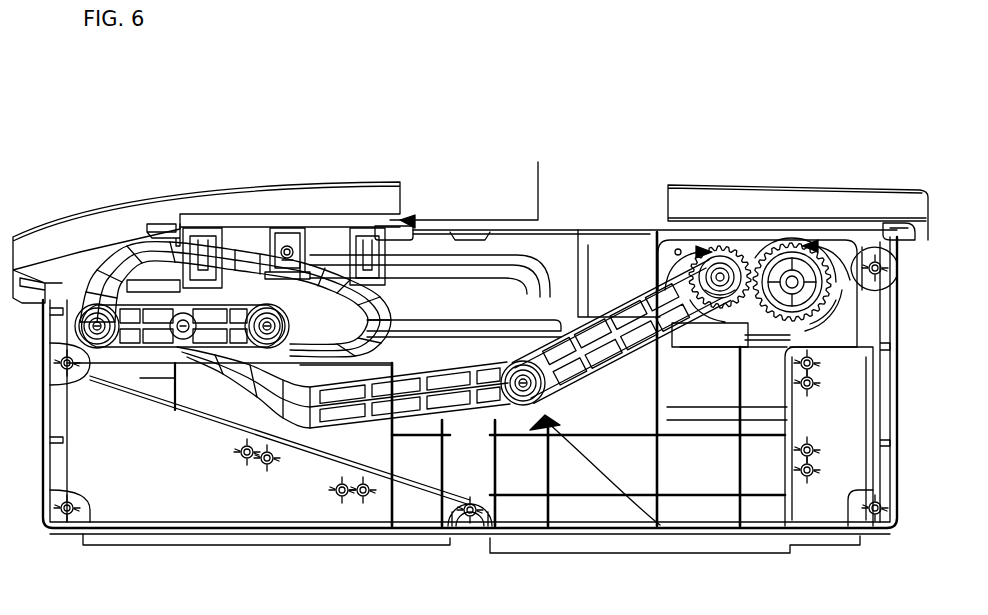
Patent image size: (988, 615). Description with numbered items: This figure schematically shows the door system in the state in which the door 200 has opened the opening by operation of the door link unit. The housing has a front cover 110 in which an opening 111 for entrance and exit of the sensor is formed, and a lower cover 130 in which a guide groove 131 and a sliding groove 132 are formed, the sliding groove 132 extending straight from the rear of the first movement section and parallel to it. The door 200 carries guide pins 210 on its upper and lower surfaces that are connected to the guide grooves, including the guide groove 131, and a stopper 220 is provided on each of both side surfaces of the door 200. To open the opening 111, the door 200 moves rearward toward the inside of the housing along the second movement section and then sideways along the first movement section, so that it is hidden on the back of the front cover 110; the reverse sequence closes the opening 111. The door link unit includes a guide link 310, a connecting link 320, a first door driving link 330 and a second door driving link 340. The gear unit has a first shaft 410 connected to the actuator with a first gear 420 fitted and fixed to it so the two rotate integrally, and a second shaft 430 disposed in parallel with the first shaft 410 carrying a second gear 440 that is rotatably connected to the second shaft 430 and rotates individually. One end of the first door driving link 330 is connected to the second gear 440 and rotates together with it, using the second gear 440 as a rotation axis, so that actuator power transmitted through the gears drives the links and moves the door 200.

The front cover 110 is at (485, 328).
The opening 111 is at (643, 203).
The lower cover 130 is at (823, 493).
The guide groove 131 is at (520, 270).
The sliding groove 132 is at (430, 328).
The door 200 is at (275, 225).
The guide pin 210 is at (287, 244).
The stopper 220 is at (163, 233).
The guide link 310 is at (110, 275).
The connecting link 320 is at (160, 337).
The first door driving link 330 is at (577, 365).
The second door driving link 340 is at (320, 405).
The first shaft 410 is at (755, 328).
The first gear 420 is at (784, 262).
The second shaft 430 is at (730, 328).
The second gear 440 is at (748, 270).